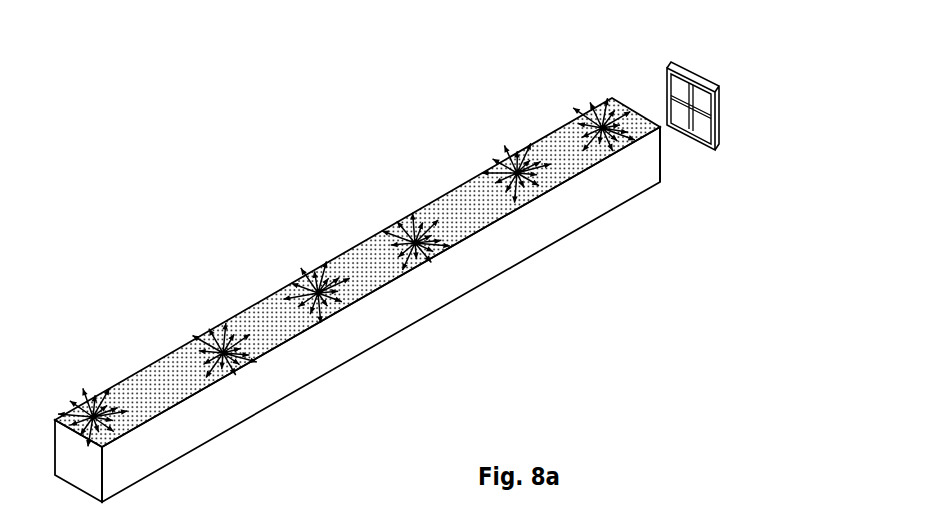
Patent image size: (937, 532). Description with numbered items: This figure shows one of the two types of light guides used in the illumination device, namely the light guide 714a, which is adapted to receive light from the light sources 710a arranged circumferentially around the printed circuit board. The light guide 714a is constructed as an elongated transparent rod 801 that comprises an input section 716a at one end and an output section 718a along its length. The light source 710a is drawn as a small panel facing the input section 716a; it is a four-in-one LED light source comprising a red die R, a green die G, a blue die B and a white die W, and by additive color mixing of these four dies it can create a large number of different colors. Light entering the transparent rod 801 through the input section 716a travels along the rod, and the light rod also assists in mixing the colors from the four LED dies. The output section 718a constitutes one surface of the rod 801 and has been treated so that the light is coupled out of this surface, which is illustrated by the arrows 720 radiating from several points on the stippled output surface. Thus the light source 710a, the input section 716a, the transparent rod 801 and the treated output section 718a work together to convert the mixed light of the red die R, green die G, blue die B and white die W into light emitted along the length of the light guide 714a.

The light guide 714a is at (464, 290).
The output section 718a is at (480, 202).
The arrows 720 is at (205, 336).
The transparent rod 801 is at (392, 308).
The input section 716a is at (662, 170).
The light source 710a is at (702, 95).
The blue die B is at (680, 86).
The red die R is at (703, 102).
The green die G is at (703, 135).
The white die W is at (678, 110).